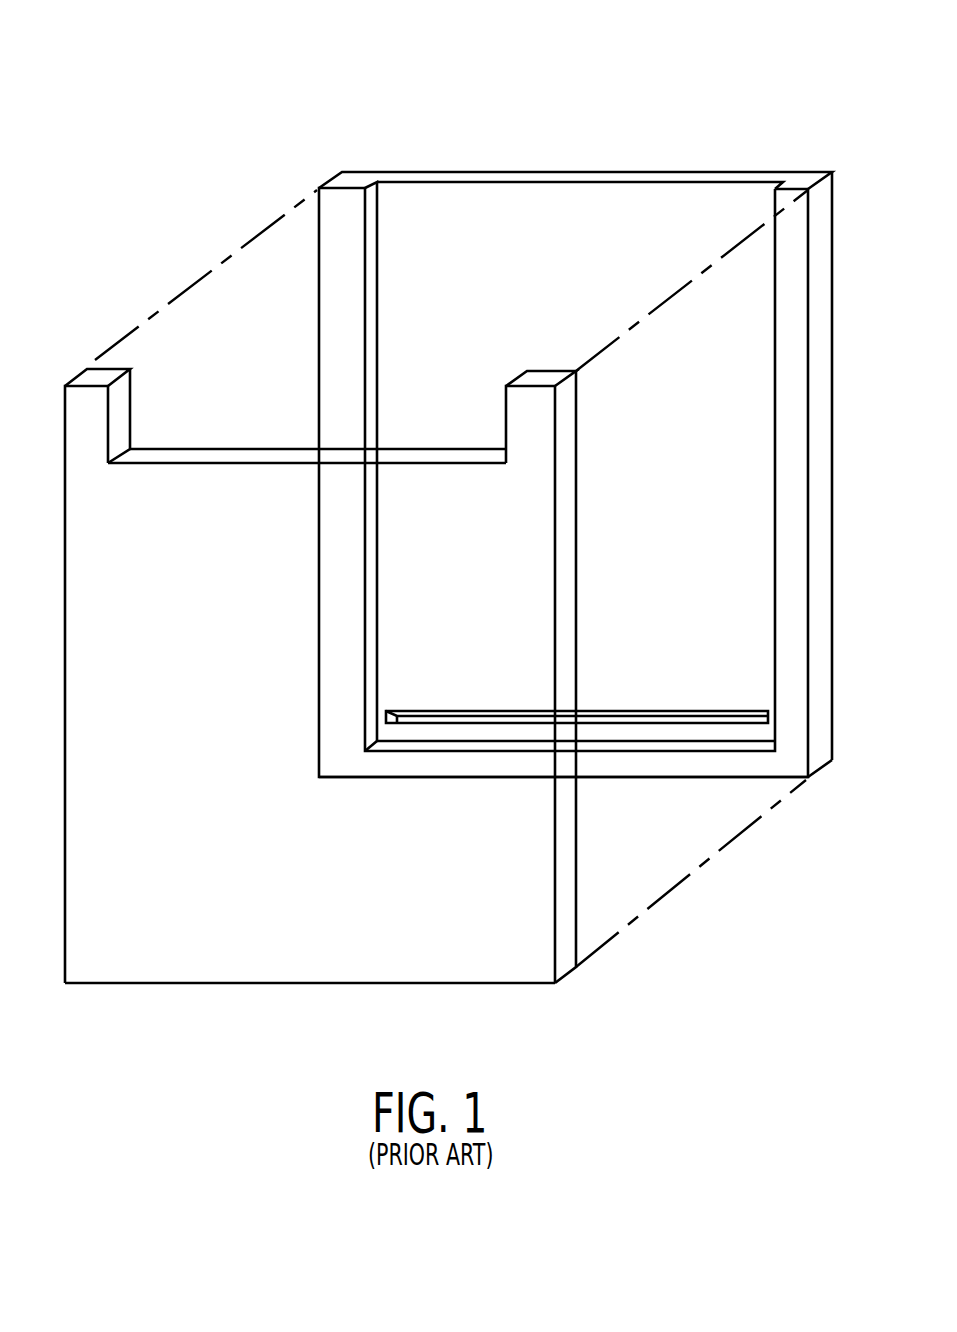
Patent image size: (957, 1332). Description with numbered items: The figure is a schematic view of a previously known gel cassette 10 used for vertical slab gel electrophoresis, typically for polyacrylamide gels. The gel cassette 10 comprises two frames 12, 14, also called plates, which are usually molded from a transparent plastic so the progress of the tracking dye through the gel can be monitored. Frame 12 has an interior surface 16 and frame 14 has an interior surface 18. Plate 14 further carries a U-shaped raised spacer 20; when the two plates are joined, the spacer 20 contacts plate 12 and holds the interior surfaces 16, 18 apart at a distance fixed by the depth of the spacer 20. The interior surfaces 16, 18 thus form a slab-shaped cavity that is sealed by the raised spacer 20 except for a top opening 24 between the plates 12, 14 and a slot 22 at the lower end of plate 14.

The gel cassette 10 is at (310, 79).
The frame 12 is at (86, 372).
The frame 14 is at (590, 178).
The interior surface 16 is at (194, 455).
The interior surface 18 is at (703, 392).
The U-shaped raised spacer 20 is at (745, 770).
The slot 22 is at (741, 710).
The top opening 24 is at (483, 189).